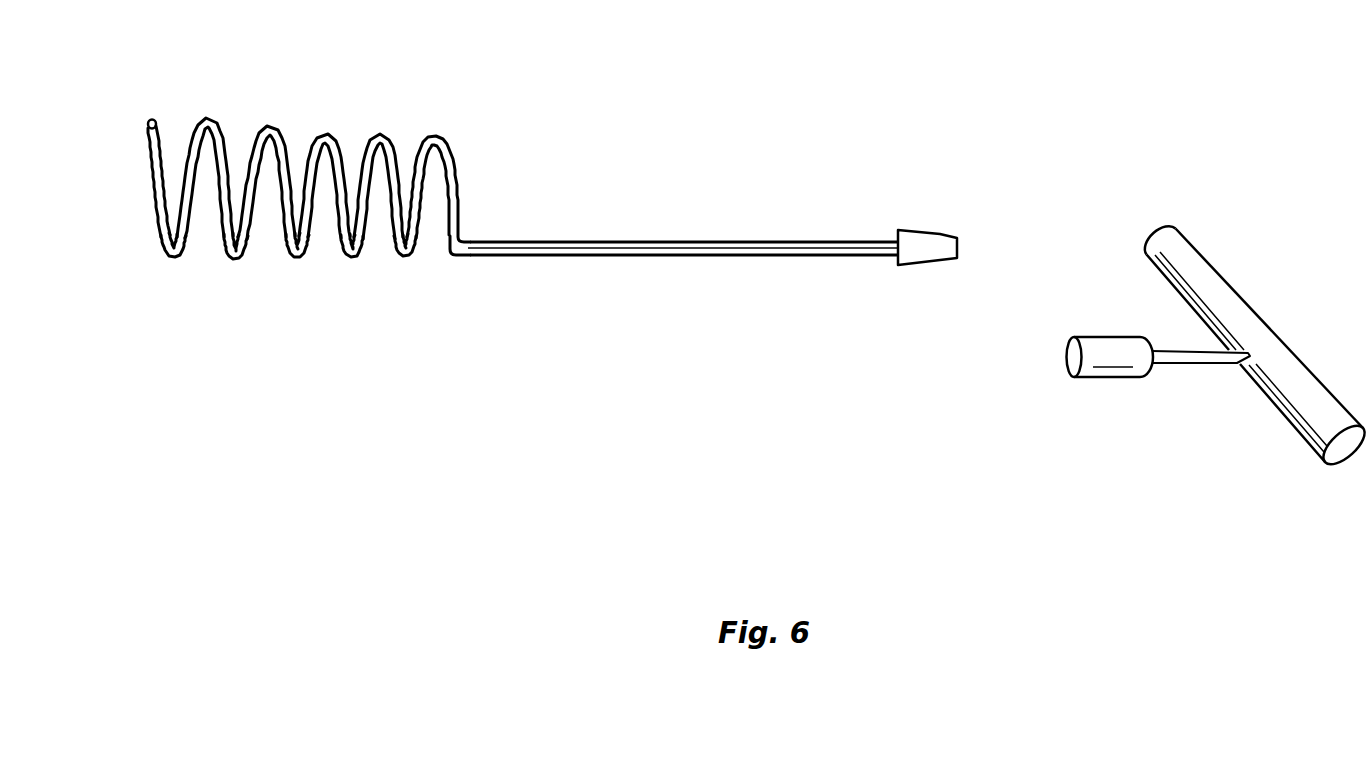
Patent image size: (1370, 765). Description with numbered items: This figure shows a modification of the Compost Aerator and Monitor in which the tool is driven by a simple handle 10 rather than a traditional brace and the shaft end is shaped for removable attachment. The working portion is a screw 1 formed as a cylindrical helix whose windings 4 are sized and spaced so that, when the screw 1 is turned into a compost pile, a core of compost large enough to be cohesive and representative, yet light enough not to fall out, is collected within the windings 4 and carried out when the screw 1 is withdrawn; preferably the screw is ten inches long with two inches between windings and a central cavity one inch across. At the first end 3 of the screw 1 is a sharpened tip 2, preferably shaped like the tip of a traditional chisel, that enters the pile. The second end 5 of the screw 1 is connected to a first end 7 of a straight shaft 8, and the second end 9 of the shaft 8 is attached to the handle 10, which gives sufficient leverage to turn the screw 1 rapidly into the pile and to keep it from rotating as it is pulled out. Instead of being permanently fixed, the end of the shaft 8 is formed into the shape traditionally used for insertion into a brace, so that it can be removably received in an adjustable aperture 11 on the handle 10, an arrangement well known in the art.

The screw 1 is at (280, 204).
The sharpened tip 2 is at (147, 122).
The first end 3 is at (158, 120).
The windings 4 is at (176, 266).
The second end 5 is at (453, 262).
The first end 7 is at (479, 242).
The straight shaft 8 is at (646, 242).
The second end 9 is at (922, 243).
The handle 10 is at (1300, 390).
The adjustable aperture 11 is at (1070, 357).